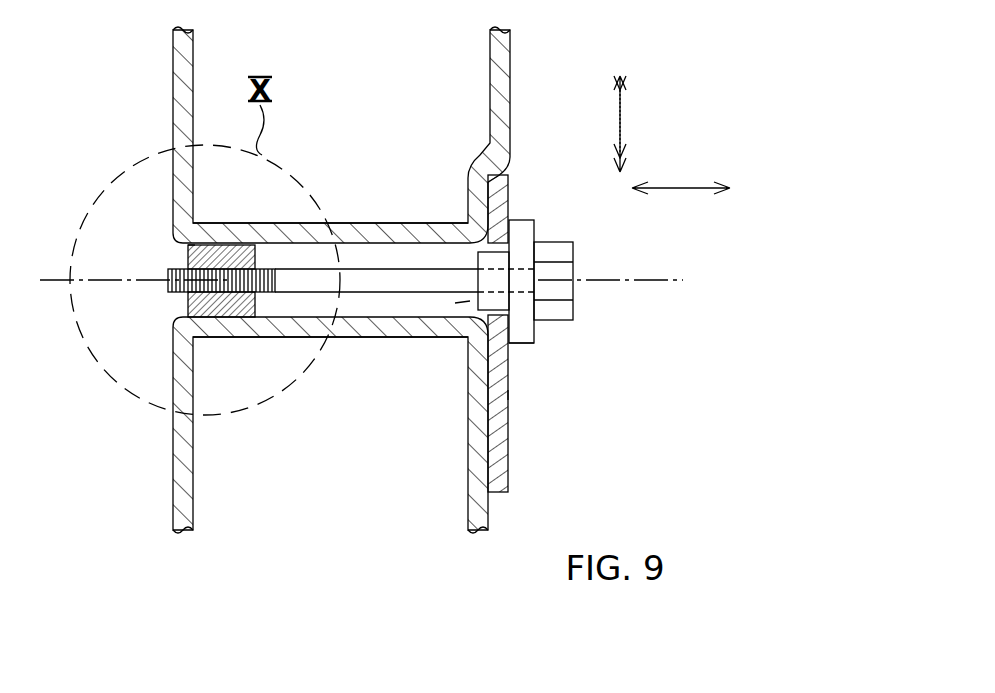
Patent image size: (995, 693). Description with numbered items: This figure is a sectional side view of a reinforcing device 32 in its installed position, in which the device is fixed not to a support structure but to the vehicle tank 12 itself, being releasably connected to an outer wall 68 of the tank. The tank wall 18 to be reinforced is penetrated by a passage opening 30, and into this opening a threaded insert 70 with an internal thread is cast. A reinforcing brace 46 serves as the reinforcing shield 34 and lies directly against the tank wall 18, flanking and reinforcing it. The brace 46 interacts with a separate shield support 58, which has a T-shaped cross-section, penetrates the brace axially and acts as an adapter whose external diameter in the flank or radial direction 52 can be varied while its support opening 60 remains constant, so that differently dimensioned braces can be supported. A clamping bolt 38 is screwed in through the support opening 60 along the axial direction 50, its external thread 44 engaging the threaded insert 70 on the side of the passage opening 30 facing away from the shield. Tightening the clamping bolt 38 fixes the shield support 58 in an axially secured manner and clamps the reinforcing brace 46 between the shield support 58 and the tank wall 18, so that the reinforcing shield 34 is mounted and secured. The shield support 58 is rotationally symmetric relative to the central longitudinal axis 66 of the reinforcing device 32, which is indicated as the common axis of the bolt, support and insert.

The vehicle tank 12 is at (507, 77).
The tank wall 18 is at (478, 185).
The passage opening 30 is at (347, 288).
The reinforcing device 32 is at (530, 390).
The reinforcing shield 34 is at (515, 352).
The clamping bolt 38 is at (578, 268).
The external thread 44 is at (168, 296).
The reinforcing brace 46 is at (503, 195).
The axial direction 50 is at (680, 188).
The flank direction 52 is at (620, 125).
The shield support 58 is at (520, 240).
The support opening 60 is at (465, 302).
The central longitudinal axis 66 is at (618, 283).
The outer wall 68 is at (287, 243).
The threaded insert 70 is at (181, 258).